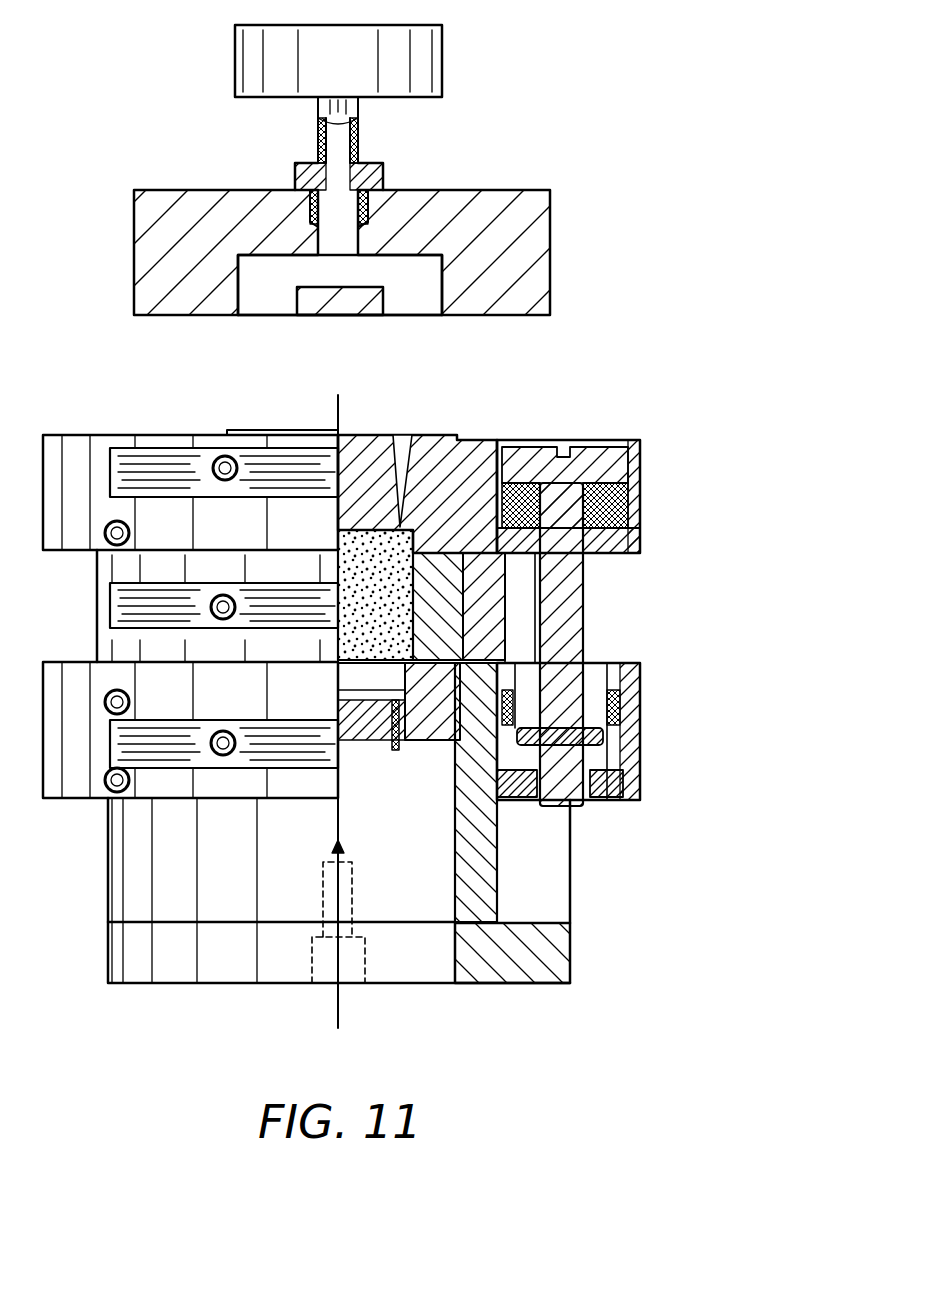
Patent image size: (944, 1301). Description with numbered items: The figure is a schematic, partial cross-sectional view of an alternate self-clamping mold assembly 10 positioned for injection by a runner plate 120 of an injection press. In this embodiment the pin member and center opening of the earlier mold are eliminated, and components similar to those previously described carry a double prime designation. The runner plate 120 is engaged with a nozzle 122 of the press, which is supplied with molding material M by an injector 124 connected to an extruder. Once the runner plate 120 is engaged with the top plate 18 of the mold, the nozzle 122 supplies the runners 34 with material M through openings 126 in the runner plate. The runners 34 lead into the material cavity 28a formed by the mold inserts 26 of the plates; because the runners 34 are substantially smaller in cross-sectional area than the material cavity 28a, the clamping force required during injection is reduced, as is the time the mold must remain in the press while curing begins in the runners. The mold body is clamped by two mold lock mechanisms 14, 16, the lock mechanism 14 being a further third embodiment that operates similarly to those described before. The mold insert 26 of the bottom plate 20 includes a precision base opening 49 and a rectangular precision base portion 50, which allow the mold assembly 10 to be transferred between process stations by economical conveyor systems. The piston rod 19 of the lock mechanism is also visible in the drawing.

The injector 124 is at (388, 60).
The nozzle 122 is at (392, 158).
The runner plate 120 is at (525, 237).
The openings 126 is at (272, 292).
The self-clamping mold assembly 10 is at (568, 395).
The mold lock mechanism 16 is at (95, 433).
The mold insert 26 is at (362, 470).
The runners 34 is at (405, 465).
The molding material M is at (380, 590).
The material cavity 28a is at (395, 745).
The piston rod 19 is at (525, 608).
The mold lock mechanism 14 is at (606, 436).
The top plate 18 is at (639, 542).
The bottom plate 20 is at (639, 721).
The precision base portion 50 is at (543, 970).
The precision base opening 49 is at (400, 987).